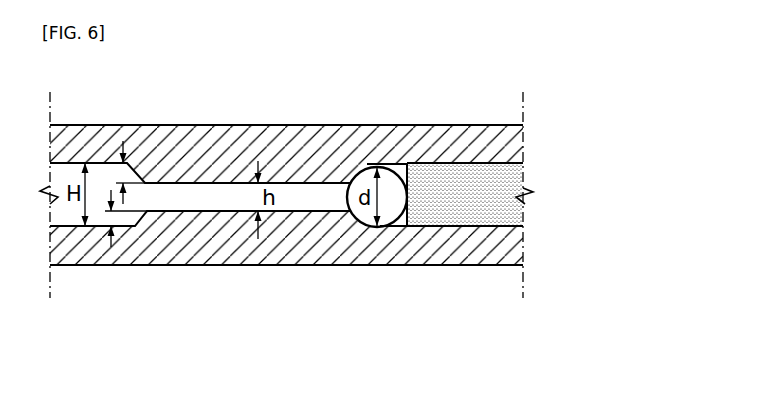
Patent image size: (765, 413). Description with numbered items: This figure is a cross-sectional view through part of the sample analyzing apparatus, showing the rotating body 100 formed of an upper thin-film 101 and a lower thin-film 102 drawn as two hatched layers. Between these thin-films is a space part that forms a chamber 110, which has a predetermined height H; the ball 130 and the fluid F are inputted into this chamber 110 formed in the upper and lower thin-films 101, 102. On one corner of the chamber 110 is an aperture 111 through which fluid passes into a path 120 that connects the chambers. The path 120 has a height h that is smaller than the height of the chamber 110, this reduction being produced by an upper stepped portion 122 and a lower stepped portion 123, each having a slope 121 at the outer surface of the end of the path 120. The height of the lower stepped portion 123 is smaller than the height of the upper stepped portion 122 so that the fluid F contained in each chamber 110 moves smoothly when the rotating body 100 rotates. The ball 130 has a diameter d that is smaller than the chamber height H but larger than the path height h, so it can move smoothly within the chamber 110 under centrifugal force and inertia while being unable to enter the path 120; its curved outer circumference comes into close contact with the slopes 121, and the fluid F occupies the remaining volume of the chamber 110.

The rotating body 100 is at (630, 130).
The upper thin-film 101 is at (520, 145).
The lower thin-film 102 is at (520, 245).
The chamber 110 is at (72, 168).
The aperture 111 is at (153, 197).
The path 120 is at (311, 182).
The slope 121 is at (144, 180).
The upper stepped portion 122 is at (118, 172).
The lower stepped portion 123 is at (118, 222).
The ball 130 is at (378, 176).
The fluid F is at (465, 178).